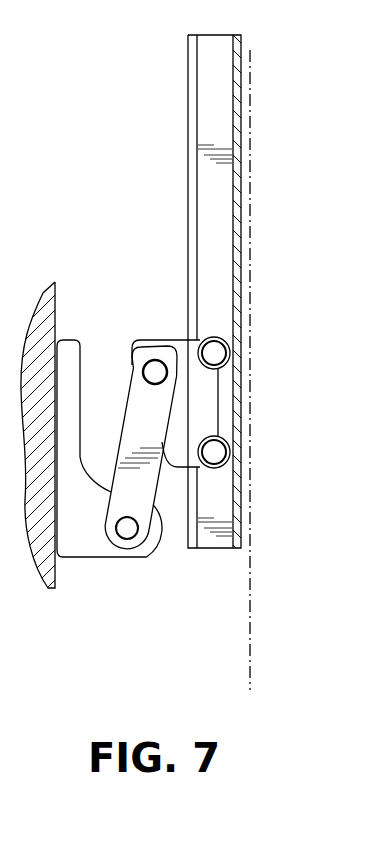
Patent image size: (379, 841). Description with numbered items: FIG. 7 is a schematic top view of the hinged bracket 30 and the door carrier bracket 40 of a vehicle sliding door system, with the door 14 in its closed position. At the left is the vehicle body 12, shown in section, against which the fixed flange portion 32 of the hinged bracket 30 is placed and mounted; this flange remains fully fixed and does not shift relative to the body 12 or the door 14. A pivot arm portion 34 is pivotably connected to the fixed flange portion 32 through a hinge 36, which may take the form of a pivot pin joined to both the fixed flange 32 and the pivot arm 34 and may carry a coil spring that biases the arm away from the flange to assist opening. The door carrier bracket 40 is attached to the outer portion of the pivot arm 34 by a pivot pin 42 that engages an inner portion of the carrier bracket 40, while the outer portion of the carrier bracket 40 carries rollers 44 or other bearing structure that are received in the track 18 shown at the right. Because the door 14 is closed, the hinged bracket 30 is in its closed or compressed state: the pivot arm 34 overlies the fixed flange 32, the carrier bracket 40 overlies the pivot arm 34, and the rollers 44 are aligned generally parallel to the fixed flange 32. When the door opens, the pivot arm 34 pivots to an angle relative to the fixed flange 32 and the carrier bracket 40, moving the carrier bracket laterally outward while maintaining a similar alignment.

The vehicle body 12 is at (55, 313).
The door 14 is at (266, 362).
The track 18 is at (212, 281).
The hinged bracket 30 is at (101, 504).
The fixed flange portion 32 is at (87, 543).
The pivot arm portion 34 is at (138, 420).
The hinge 36 is at (130, 530).
The door carrier bracket 40 is at (180, 352).
The pivot pin 42 is at (214, 452).
The rollers 44 is at (214, 353).